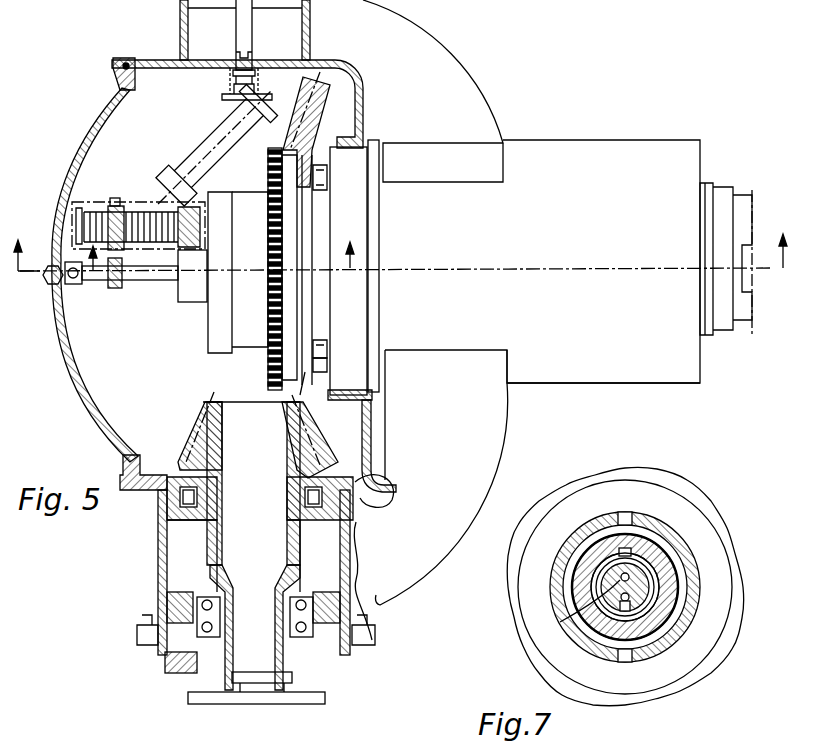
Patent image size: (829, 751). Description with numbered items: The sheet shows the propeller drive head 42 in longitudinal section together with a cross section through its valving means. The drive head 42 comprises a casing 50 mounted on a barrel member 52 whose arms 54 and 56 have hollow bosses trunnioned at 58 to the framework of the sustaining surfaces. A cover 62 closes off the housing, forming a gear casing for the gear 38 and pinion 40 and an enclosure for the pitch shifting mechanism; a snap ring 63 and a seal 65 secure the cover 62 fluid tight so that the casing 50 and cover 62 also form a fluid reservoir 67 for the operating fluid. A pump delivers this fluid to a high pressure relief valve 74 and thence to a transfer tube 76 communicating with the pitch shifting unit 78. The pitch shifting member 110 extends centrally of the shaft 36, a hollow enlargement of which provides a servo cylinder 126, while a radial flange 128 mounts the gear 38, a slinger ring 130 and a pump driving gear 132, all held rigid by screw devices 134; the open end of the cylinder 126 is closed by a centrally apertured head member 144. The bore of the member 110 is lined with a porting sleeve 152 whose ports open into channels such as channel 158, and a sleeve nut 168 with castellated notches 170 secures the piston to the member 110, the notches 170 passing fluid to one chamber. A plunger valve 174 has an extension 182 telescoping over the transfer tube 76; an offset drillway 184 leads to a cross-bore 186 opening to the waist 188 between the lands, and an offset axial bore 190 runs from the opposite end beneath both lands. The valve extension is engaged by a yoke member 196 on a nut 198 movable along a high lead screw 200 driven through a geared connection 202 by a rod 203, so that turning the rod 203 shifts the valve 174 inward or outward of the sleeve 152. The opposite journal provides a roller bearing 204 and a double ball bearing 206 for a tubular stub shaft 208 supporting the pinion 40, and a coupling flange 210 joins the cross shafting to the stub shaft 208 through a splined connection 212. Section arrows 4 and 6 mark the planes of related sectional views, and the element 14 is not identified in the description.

In FIG. 5, the section line 4- 4 is at (399, 241).
In FIG. 5, the section line 6- 6 is at (220, 279).
In FIG. 5, the base frame 14 is at (612, 383).
In FIG. 5, the shaft 36 is at (740, 197).
In FIG. 5, the gear 38 is at (343, 448).
In FIG. 5, the pinion 40 is at (192, 430).
In FIG. 5, the propeller drive head 42 is at (365, 101).
In FIG. 5, the casing 50 is at (156, 60).
In FIG. 5, the barrel member 52 is at (614, 148).
In FIG. 5, the arm 54 is at (412, 596).
In FIG. 5, the arm 56 is at (485, 112).
In FIG. 5, the trunnion 58 is at (170, 674).
In FIG. 5, the cover 62 is at (82, 402).
In FIG. 5, the snap ring 63 is at (121, 73).
In FIG. 5, the seal 65 is at (122, 58).
In FIG. 5, the fluid reservoir 67 is at (130, 433).
In FIG. 5, the high pressure relief valve 74 is at (52, 298).
In FIG. 5, the transfer tube 76 is at (88, 285).
In FIG. 5, the pitch shifting unit 78 is at (216, 338).
In FIG. 7, the pitch shifting member 110 is at (580, 578).
In FIG. 5, the servo cylinder 126 is at (246, 205).
In FIG. 5, the radial flange 128 is at (328, 178).
In FIG. 5, the slinger ring 130 is at (318, 382).
In FIG. 5, the pump driving gear 132 is at (272, 303).
In FIG. 5, the screw devices 134 is at (321, 360).
In FIG. 7, the head member 144 is at (682, 490).
In FIG. 7, the porting sleeve 152 is at (650, 588).
In FIG. 7, the channel 158 is at (635, 556).
In FIG. 5, the sleeve nut 168 is at (188, 294).
In FIG. 7, the sleeve nut 168 is at (586, 540).
In FIG. 7, the notches 170 is at (683, 620).
In FIG. 7, the plunger valve 174 is at (602, 612).
In FIG. 5, the extension 182 is at (148, 282).
In FIG. 7, the offset drillway 184 is at (575, 612).
In FIG. 7, the cross-bore 186 is at (622, 610).
In FIG. 7, the waist 188 is at (650, 595).
In FIG. 7, the offset axially directed bore 190 is at (660, 592).
In FIG. 5, the yoke member 196 is at (122, 258).
In FIG. 5, the nut 198 is at (132, 208).
In FIG. 5, the high lead screw device 200 is at (140, 208).
In FIG. 5, the geared connection 202 is at (224, 99).
In FIG. 5, the rod 203 is at (254, 30).
In FIG. 5, the roller bearing 204 is at (358, 500).
In FIG. 5, the double ball bearing 206 is at (332, 638).
In FIG. 5, the tubular stub shaft 208 is at (215, 535).
In FIG. 5, the coupling flange 210 is at (320, 700).
In FIG. 5, the splined connection 212 is at (236, 686).